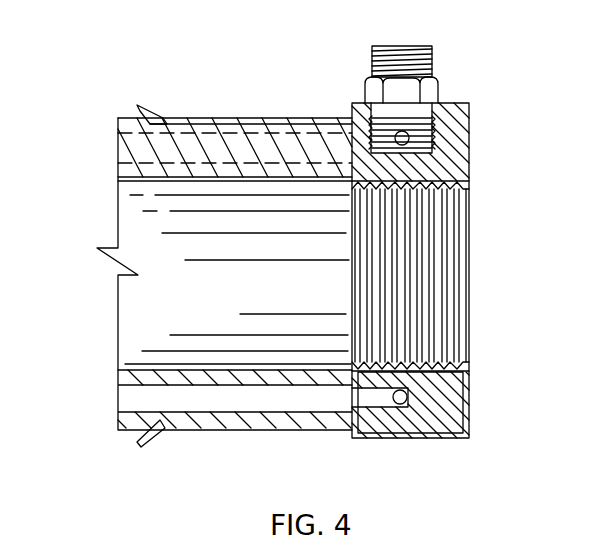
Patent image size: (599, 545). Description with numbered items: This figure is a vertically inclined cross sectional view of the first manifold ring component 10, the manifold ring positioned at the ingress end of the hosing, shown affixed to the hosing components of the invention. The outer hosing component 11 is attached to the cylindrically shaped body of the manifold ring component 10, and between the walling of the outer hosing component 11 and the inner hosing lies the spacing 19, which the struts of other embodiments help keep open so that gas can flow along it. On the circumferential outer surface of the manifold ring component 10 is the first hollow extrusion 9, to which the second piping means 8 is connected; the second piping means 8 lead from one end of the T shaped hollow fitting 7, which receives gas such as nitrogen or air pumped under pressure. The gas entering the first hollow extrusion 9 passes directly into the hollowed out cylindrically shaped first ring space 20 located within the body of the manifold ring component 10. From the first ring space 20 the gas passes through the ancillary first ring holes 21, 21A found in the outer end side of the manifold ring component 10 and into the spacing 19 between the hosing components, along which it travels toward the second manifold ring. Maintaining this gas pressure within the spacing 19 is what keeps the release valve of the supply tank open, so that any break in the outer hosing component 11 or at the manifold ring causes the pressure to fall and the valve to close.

The T shaped hollow fitting 7 is at (227, 138).
The second piping means 8 is at (557, 90).
The first hollow extrusion 9 is at (398, 46).
The first manifold ring component 10 is at (393, 438).
The outer hosing component 11 is at (192, 124).
The spacing 19 is at (128, 152).
The first ring space 20 is at (405, 306).
The ancillary first ring hole 21 is at (406, 397).
The ancillary first ring hole 21A is at (408, 137).